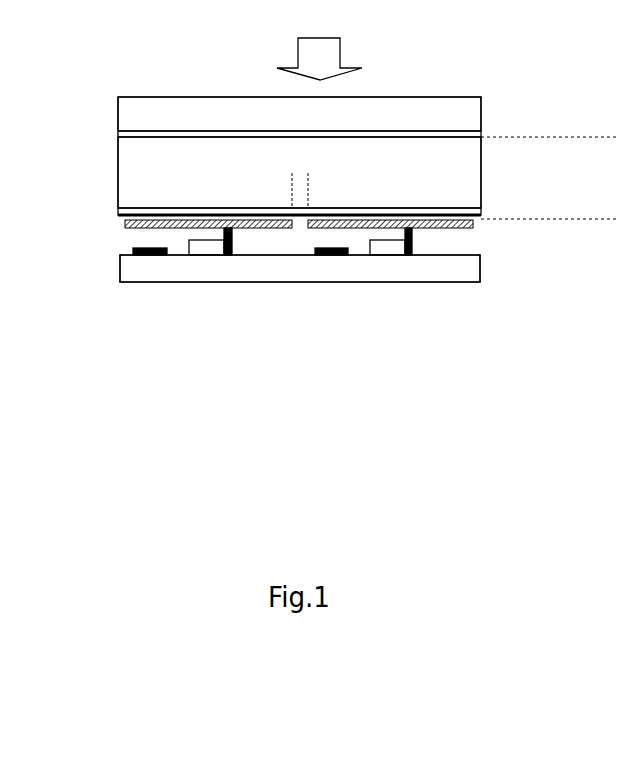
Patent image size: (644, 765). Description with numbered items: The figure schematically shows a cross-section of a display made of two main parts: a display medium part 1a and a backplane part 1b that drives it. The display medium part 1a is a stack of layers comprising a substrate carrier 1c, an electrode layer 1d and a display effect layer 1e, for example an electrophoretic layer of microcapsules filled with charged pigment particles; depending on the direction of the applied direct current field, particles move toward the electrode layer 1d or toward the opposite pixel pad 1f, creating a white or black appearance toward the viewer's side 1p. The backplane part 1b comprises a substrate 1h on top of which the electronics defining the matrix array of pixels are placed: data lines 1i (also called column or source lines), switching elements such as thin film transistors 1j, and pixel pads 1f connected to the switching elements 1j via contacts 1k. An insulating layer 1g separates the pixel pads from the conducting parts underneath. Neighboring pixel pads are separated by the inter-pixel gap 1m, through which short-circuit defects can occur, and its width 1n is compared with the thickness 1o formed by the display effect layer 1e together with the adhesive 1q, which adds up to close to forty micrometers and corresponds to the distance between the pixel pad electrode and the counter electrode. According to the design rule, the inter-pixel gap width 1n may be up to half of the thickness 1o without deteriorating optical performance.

The display medium part 1a is at (98, 98).
The backplane part 1b is at (98, 222).
The substrate carrier 1c is at (483, 109).
The electrode layer 1d is at (483, 132).
The display effect layer 1e is at (483, 158).
The pixel pad 1f is at (477, 225).
The insulating layer 1g is at (477, 244).
The substrate 1h is at (483, 278).
The data lines 1i is at (156, 258).
The thin film transistors 1j is at (209, 251).
The contacts 1k is at (234, 243).
The inter-pixel gap 1m is at (300, 230).
The inter-pixel gap width 1n is at (266, 187).
The thickness 1o is at (592, 138).
The viewer's side 1p is at (319, 59).
The adhesive 1q is at (483, 212).